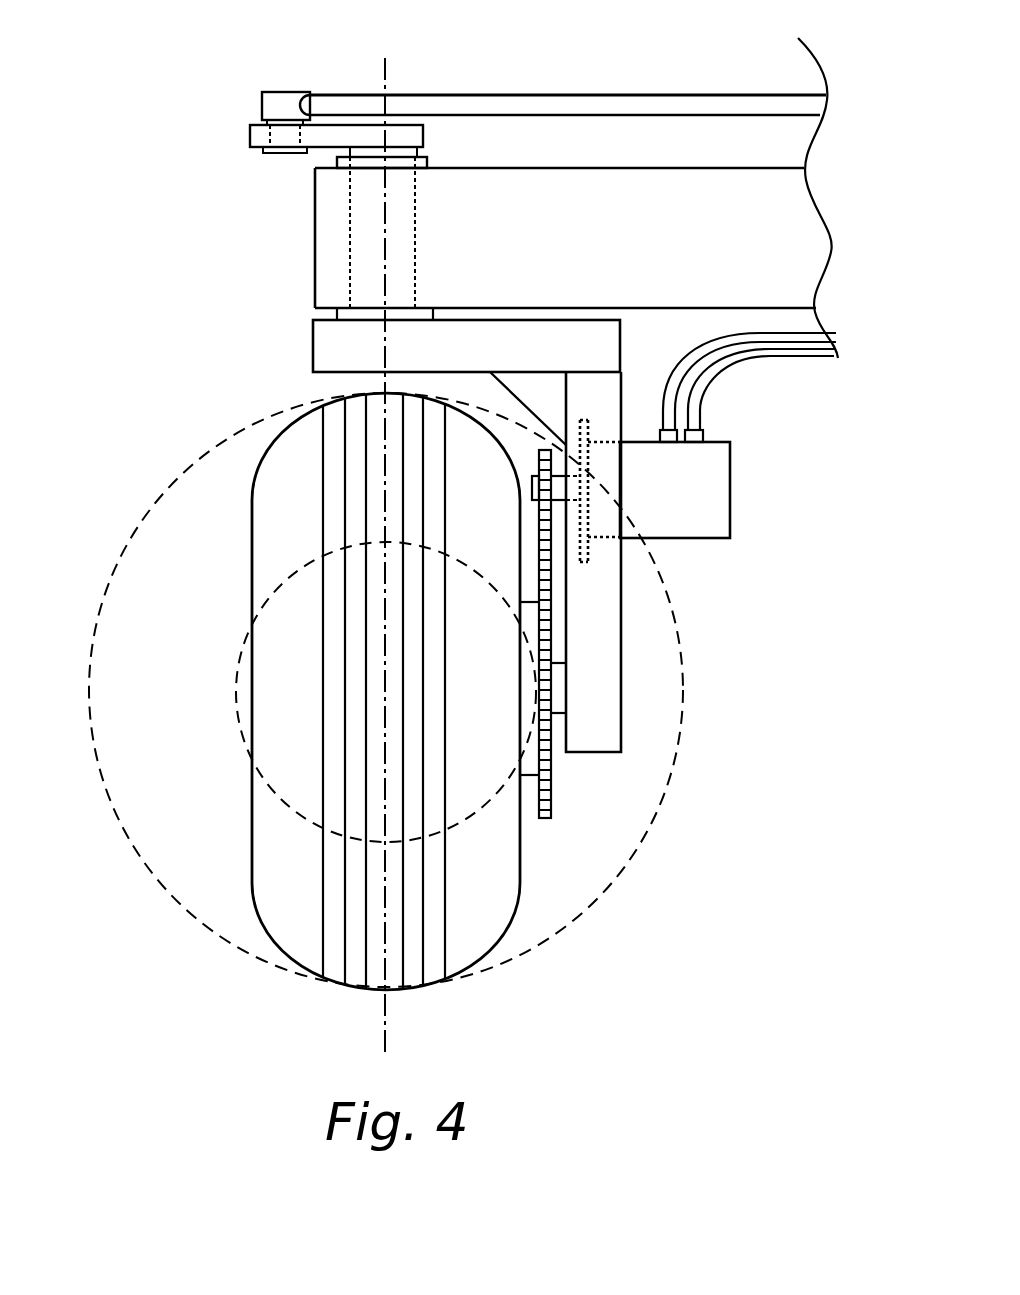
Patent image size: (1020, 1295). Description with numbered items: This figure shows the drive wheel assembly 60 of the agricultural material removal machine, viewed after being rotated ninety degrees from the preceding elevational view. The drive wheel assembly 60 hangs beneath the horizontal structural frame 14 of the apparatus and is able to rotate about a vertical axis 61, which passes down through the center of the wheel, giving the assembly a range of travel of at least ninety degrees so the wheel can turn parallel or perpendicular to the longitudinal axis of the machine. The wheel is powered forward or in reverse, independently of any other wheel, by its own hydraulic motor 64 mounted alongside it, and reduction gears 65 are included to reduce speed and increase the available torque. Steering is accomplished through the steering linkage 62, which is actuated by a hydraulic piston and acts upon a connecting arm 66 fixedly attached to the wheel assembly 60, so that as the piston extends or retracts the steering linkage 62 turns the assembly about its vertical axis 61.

The horizontal structural frame 14 is at (332, 248).
The drive wheel assembly 60 is at (155, 448).
The vertical axis 61 is at (390, 77).
The steering linkage 62 is at (517, 95).
The hydraulic motor 64 is at (670, 513).
The reduction gears 65 is at (553, 765).
The connecting arm 66 is at (250, 131).